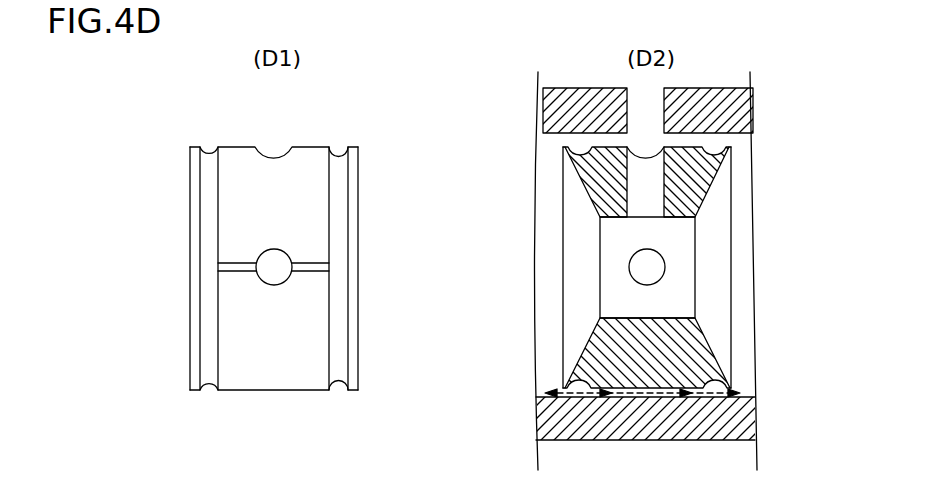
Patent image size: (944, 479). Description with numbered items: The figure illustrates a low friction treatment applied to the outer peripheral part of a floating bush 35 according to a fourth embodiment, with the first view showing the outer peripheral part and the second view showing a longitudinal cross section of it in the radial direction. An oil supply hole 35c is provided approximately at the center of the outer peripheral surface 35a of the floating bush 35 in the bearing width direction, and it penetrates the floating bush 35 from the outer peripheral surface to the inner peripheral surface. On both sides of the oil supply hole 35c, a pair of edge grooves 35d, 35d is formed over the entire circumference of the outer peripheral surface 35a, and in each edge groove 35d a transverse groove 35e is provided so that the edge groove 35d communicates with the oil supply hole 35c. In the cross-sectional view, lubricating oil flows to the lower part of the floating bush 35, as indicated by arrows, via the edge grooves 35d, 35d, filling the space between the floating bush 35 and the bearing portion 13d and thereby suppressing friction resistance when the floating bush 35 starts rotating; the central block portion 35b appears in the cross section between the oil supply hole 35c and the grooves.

The floating bush 35 is at (374, 191).
The outer peripheral surface 35a is at (282, 390).
The central block portion 35b is at (680, 293).
The oil supply hole 35c is at (266, 283).
The edge groove 35d is at (213, 152).
The transverse groove 35e is at (302, 266).
The bearing portion 13d is at (727, 110).